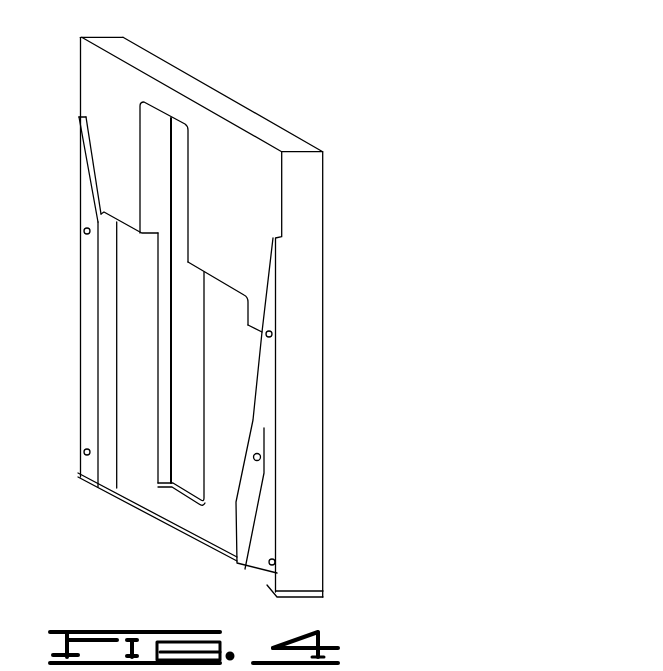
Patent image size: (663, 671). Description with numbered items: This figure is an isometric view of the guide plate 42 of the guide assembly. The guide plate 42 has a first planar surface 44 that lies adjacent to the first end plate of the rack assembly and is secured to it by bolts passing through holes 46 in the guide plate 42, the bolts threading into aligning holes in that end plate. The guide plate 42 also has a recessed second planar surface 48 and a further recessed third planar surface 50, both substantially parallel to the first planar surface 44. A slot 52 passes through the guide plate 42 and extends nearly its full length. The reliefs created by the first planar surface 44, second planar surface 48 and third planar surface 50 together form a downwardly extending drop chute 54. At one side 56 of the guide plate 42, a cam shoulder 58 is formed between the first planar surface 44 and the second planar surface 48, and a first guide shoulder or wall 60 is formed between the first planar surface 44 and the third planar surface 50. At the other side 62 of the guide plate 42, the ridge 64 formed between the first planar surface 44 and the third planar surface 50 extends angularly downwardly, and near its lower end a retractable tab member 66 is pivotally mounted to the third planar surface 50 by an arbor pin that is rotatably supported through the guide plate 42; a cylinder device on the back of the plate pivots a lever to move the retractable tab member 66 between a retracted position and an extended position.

The guide plate 42 is at (108, 42).
The first planar surface 44 is at (85, 292).
The holes 46 is at (84, 230).
The recessed second planar surface 48 is at (103, 80).
The further recessed third planar surface 50 is at (140, 478).
The slot 52 is at (186, 477).
The drop chute 54 is at (113, 148).
The one side 56 is at (78, 352).
The cam shoulder 58 is at (97, 173).
The first guide shoulder or wall 60 is at (107, 395).
The other side 62 is at (310, 255).
The ridge 64 is at (260, 344).
The retractable tab member 66 is at (240, 565).